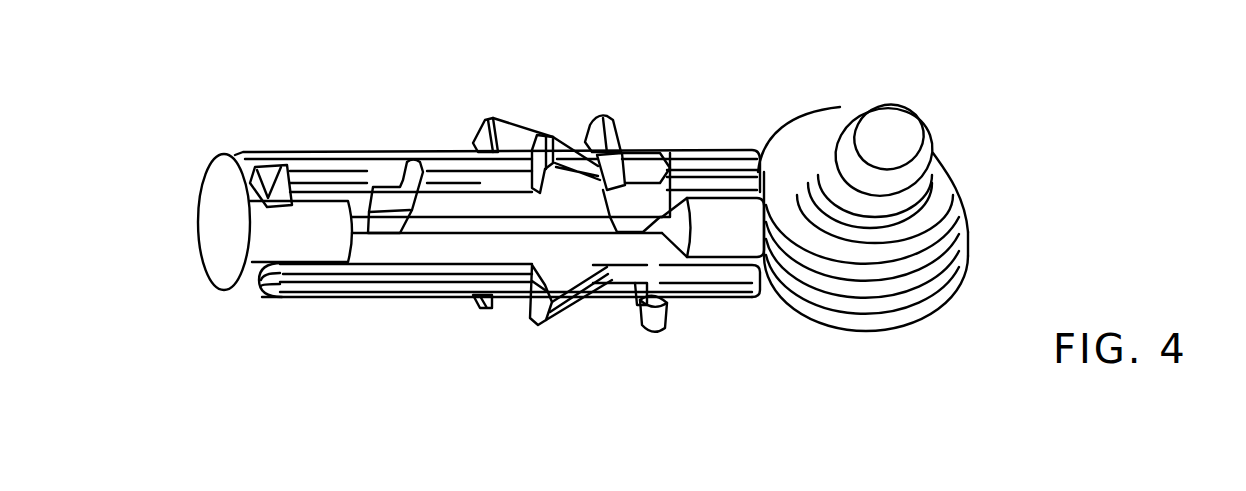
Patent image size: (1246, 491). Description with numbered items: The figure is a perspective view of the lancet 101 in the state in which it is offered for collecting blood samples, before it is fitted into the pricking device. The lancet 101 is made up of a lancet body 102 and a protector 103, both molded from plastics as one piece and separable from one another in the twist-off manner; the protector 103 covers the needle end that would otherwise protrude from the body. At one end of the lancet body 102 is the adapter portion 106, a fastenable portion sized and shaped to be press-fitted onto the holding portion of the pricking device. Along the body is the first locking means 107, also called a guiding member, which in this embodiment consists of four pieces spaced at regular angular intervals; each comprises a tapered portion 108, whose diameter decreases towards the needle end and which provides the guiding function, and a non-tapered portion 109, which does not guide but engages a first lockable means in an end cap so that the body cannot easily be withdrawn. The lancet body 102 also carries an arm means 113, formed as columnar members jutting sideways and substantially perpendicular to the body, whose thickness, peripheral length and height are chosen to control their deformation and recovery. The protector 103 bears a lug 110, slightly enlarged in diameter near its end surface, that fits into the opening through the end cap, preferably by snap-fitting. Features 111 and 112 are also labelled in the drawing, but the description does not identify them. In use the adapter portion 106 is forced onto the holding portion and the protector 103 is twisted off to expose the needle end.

The lancet 101 is at (703, 122).
The lancet body 102 is at (357, 150).
The needle end protector 103 is at (895, 314).
The adapter portion 106 is at (310, 278).
The first locking means 107 is at (503, 126).
The tapered portion 108 is at (583, 294).
The non-tapered portion 109 is at (542, 324).
The lug 110 is at (883, 127).
The stepped ring 111 is at (953, 190).
The end cap 112 is at (262, 247).
The arm means 113 is at (666, 302).